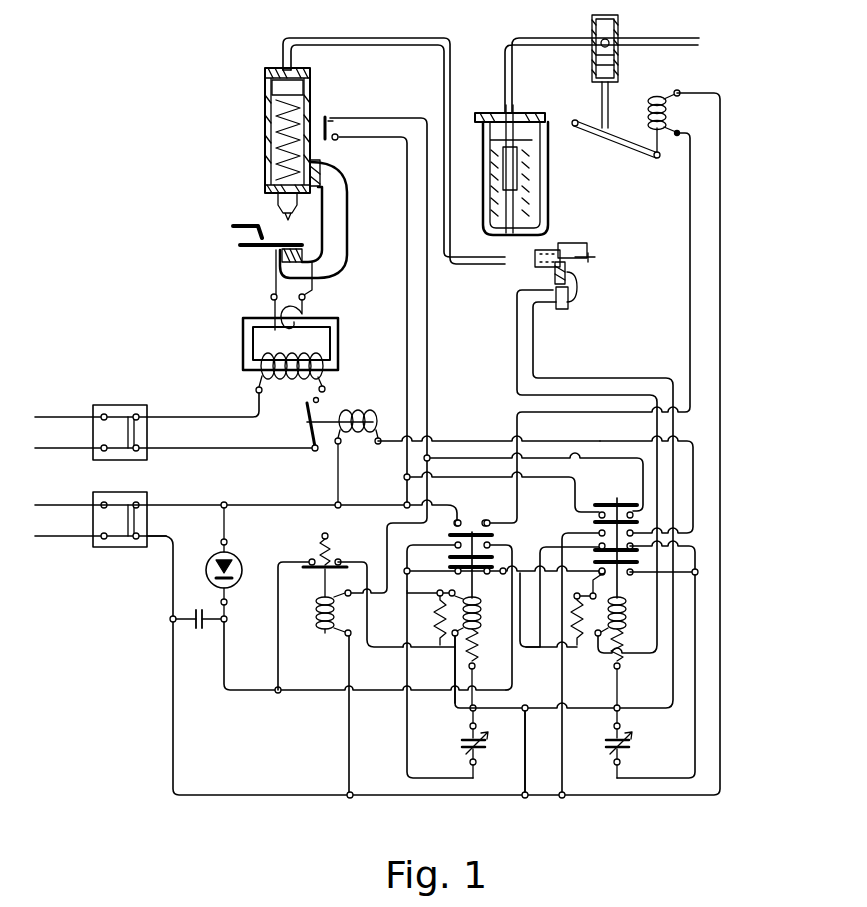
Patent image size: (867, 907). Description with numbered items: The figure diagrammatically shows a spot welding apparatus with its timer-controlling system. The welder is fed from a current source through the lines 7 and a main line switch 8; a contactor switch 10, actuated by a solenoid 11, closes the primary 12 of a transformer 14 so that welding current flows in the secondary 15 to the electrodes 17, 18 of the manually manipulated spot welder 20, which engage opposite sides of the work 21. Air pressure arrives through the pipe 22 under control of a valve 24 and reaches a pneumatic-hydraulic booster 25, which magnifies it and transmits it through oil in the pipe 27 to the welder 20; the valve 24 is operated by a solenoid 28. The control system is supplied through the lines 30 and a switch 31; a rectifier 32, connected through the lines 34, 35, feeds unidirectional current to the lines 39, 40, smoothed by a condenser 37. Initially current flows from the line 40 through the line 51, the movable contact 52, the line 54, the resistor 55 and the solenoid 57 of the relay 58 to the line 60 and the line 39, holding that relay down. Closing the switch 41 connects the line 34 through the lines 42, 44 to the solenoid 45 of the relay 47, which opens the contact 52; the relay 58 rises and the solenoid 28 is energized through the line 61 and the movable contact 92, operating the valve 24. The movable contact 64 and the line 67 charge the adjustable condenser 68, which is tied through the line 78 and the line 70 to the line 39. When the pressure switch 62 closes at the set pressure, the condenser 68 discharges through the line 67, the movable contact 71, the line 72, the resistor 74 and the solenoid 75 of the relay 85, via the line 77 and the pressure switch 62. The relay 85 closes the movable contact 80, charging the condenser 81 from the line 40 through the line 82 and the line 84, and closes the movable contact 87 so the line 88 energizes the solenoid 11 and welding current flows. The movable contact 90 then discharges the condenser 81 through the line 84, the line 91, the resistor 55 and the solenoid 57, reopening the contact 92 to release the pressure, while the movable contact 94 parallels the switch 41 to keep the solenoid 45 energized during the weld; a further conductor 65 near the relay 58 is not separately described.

The lines 7 is at (59, 447).
The main line switch 8 is at (116, 405).
The contactor switch 10 is at (308, 433).
The solenoid 11 is at (358, 410).
The primary 12 is at (337, 355).
The transformer 14 is at (338, 330).
The secondary 15 is at (306, 303).
The electrode 17 is at (280, 253).
The electrode 18 is at (268, 215).
The spot welder 20 is at (265, 147).
The work 21 is at (255, 236).
The pipe 22 is at (651, 42).
The valve 24 is at (620, 28).
The pneumatic-hydraulic booster 25 is at (540, 181).
The pipe 27 is at (380, 42).
The solenoid 28 is at (668, 112).
The lines 30 is at (64, 540).
The switch 31 is at (118, 549).
The rectifier 32 is at (237, 557).
The line 34 is at (256, 503).
The line 35 is at (227, 527).
The condenser 37 is at (199, 630).
The line 39 is at (722, 211).
The line 40 is at (228, 651).
The switch 41 is at (337, 121).
The line 42 is at (405, 223).
The line 44 is at (428, 356).
The solenoid 45 is at (318, 629).
The relay 47 is at (323, 589).
The line 51 is at (279, 666).
The movable contact 52 is at (326, 553).
The line 54 is at (369, 620).
The resistor 55 is at (437, 618).
The solenoid 57 is at (476, 650).
The relay 58 is at (474, 605).
The line 60 is at (445, 675).
The line 61 is at (688, 252).
The pressure switch 62 is at (590, 246).
The movable contact 64 is at (449, 567).
The conductor 65 is at (437, 594).
The line 67 is at (409, 732).
The adjustable condenser 68 is at (447, 439).
The line 70 is at (507, 712).
The movable contact 71 is at (452, 546).
The line 72 is at (527, 540).
The resistor 74 is at (580, 653).
The solenoid 75 is at (625, 613).
The line 77 is at (516, 352).
The line 78 is at (605, 378).
The movable contact 80 is at (595, 557).
The condenser 81 is at (632, 748).
The line 82 is at (570, 573).
The line 84 is at (696, 578).
The relay 85 is at (615, 515).
The movable contact 87 is at (594, 525).
The line 88 is at (691, 487).
The movable contact 90 is at (634, 551).
The line 91 is at (441, 650).
The movable contact 92 is at (466, 531).
The movable contact 94 is at (612, 500).